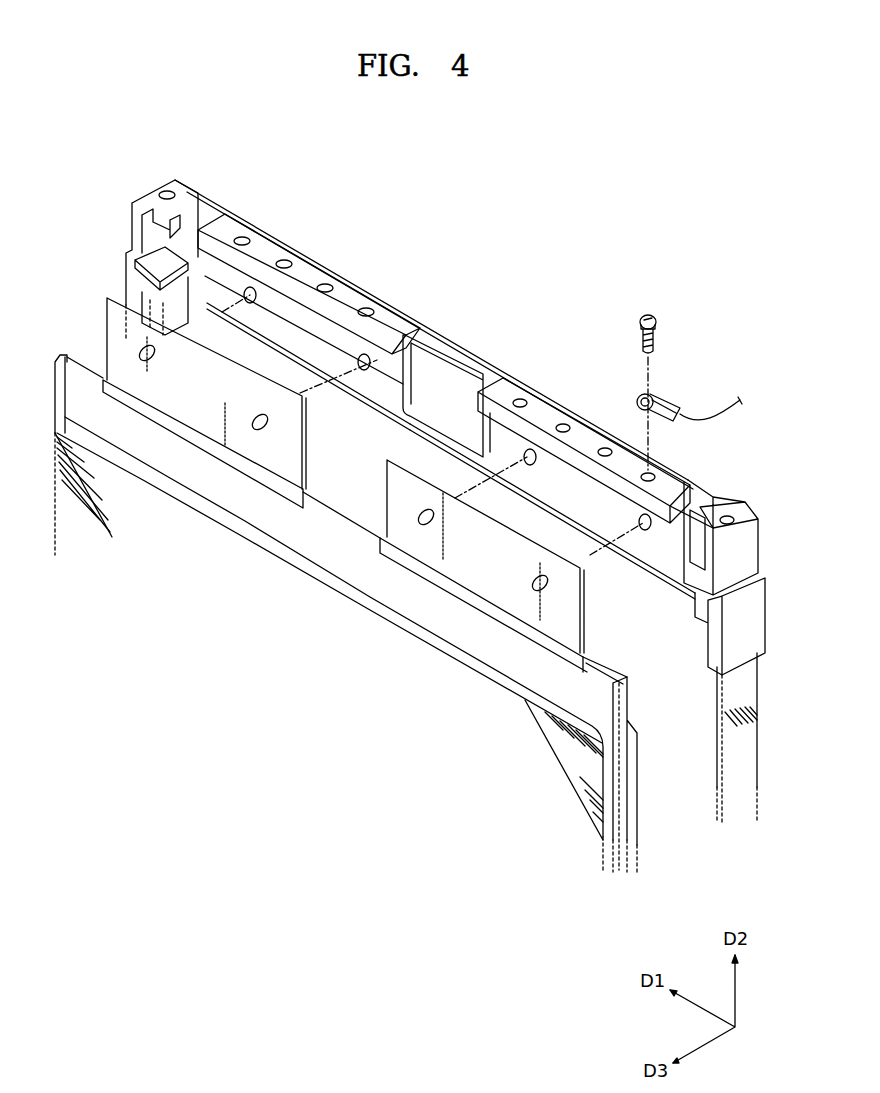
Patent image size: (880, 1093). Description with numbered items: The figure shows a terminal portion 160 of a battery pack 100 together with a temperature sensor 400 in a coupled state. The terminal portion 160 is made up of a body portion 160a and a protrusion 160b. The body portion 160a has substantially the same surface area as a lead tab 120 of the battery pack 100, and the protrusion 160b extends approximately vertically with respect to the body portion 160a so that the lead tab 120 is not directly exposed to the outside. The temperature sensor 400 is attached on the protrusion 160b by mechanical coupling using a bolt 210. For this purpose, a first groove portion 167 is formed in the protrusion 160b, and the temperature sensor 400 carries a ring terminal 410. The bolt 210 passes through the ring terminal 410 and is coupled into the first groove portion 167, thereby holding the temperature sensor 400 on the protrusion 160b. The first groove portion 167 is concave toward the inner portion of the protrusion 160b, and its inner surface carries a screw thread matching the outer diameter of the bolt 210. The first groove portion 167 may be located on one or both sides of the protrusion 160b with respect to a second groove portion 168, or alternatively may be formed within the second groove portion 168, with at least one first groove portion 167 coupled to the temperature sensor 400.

The battery pack 100 is at (542, 806).
The lead tab 120 is at (113, 338).
The terminal portion 160 is at (337, 198).
The body portion 160a is at (307, 342).
The protrusion 160b is at (262, 276).
The first groove portion 167 is at (660, 472).
The second groove portion 168 is at (604, 448).
The bolt 210 is at (649, 315).
The temperature sensor 400 is at (672, 406).
The ring terminal 410 is at (643, 400).